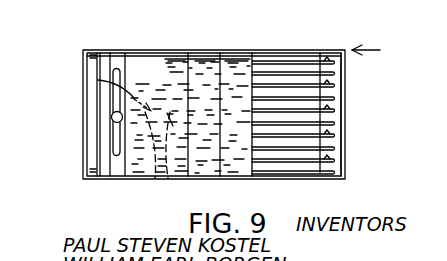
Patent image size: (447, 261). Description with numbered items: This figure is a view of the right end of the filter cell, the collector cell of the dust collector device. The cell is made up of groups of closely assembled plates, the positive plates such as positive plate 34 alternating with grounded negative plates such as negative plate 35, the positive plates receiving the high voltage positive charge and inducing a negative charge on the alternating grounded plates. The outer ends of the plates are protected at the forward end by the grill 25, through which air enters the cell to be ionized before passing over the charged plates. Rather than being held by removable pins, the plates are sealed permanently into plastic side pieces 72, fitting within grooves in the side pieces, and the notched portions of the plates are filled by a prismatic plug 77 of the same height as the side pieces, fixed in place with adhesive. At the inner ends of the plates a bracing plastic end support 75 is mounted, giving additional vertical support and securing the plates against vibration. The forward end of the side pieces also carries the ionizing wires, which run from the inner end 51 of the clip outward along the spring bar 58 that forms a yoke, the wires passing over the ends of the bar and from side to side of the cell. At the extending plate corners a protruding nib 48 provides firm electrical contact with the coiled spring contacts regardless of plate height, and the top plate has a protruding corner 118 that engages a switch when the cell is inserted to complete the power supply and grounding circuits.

The grill 25 is at (87, 116).
The plastic side pieces 72 is at (147, 68).
The spring bar 58 is at (112, 141).
The inner end 51 is at (98, 80).
The negative plate 35 is at (154, 180).
The positive plate 34 is at (168, 179).
The prismatic plug 77 is at (203, 70).
The end support 75 is at (343, 93).
The nib 48 is at (330, 134).
The protruding corner 118 is at (385, 49).